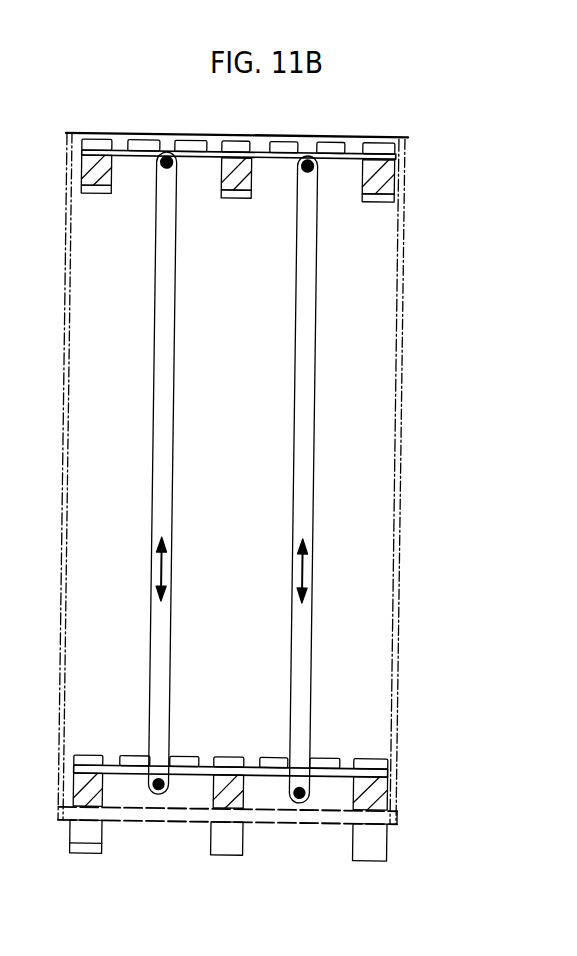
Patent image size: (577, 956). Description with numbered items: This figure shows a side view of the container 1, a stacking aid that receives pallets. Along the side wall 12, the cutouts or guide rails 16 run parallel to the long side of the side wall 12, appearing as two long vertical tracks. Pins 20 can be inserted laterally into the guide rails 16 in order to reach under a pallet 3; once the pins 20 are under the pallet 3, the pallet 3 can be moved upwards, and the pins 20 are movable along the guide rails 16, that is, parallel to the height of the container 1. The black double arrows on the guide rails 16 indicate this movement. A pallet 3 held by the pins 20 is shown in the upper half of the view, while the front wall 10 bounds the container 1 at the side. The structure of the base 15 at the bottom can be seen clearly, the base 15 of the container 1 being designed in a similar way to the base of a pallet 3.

The container 1 is at (459, 239).
The pallet 3 is at (392, 173).
The front wall 10 is at (0, 598).
The side wall 12 is at (365, 563).
The base 15 is at (255, 846).
The guide rail 16 is at (300, 402).
The pin 20 is at (192, 185).